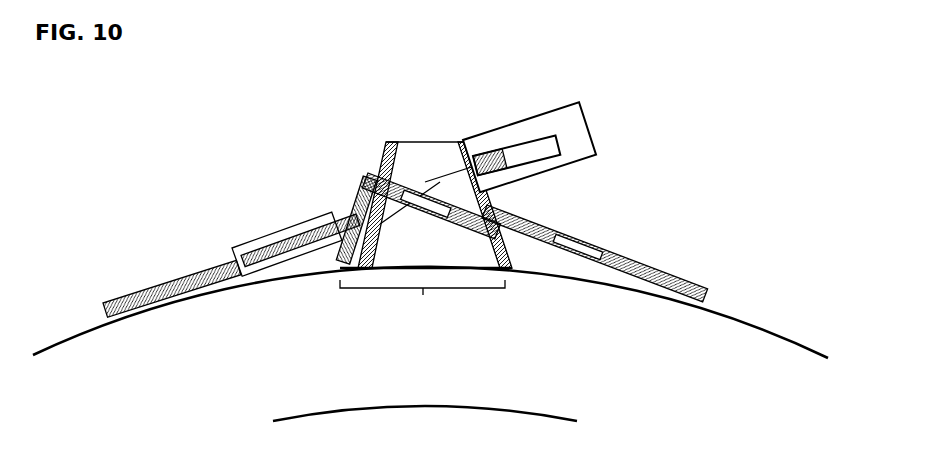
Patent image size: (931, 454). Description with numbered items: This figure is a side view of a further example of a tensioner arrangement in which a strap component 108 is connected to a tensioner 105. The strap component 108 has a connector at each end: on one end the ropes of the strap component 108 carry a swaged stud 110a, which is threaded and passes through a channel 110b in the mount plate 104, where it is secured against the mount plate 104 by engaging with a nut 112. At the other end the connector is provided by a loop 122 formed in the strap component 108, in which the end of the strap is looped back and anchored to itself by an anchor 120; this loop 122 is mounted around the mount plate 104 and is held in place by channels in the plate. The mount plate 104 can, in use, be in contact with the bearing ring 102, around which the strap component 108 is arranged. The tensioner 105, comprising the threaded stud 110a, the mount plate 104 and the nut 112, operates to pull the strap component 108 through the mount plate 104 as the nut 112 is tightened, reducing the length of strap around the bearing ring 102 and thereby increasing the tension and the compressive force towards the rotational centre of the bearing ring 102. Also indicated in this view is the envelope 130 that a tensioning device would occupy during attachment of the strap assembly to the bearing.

The bearing ring 102 is at (608, 375).
The mount plate 104 is at (422, 304).
The tensioner 105 is at (447, 141).
The strap component 108 is at (165, 280).
The swaged stud 110a is at (272, 246).
The channel 110b is at (393, 206).
The nut 112 is at (489, 150).
The anchor 120 is at (595, 245).
The loop 122 is at (444, 190).
The envelope 130 is at (600, 151).